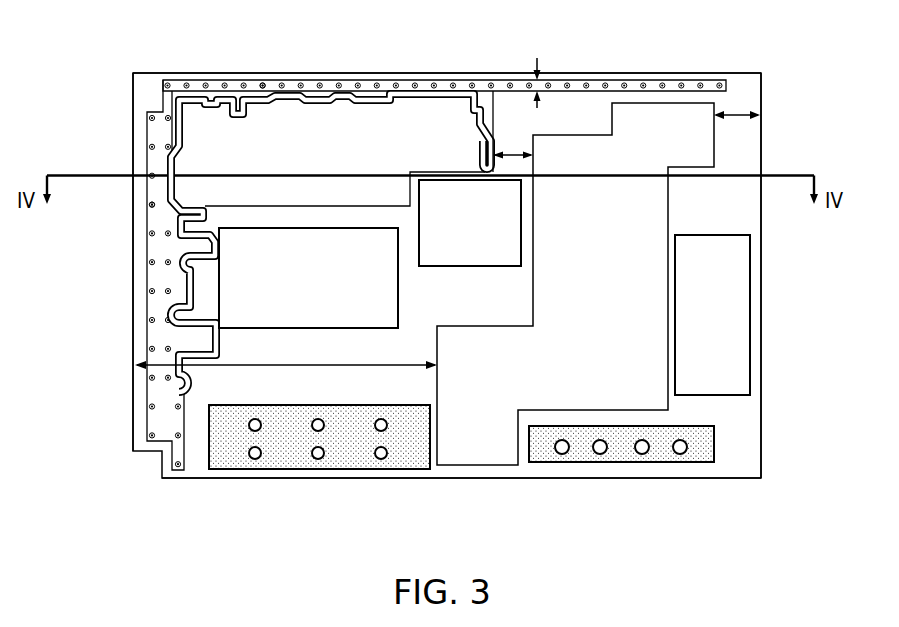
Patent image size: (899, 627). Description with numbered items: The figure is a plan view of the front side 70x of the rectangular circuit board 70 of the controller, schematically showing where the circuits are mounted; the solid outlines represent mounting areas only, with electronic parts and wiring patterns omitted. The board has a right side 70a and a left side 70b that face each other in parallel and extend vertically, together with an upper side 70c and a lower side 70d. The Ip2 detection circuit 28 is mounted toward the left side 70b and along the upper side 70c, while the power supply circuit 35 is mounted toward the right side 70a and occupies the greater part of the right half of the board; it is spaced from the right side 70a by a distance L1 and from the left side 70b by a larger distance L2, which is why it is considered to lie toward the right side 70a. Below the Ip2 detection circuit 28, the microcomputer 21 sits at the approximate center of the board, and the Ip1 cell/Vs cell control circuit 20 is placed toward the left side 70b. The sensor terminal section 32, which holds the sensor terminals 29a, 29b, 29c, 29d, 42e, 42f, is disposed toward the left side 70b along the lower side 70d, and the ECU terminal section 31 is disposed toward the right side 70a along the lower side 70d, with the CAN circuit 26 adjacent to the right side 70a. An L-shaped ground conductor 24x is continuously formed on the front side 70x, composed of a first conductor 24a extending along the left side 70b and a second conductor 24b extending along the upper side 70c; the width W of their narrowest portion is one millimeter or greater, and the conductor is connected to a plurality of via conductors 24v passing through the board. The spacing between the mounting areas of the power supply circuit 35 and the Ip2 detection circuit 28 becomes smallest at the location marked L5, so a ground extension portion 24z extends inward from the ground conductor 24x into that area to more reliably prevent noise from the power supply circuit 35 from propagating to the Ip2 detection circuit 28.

The circuit board 70 is at (727, 210).
The front side 70x is at (844, 242).
The right side 70a is at (762, 118).
The left side 70b is at (133, 398).
The upper side 70c is at (357, 80).
The lower side 70d is at (401, 479).
The ground conductor 24x is at (125, 23).
The first conductor 24a is at (152, 128).
The second conductor 24b is at (216, 85).
The via conductors 24v is at (262, 88).
The ground extension portion 24z is at (490, 147).
The Ip2 detection circuit 28 is at (410, 105).
The Ip1 cell/Vs cell control circuit 20 is at (399, 301).
The microcomputer 21 is at (465, 252).
The CAN circuit 26 is at (750, 322).
The power supply circuit 35 is at (481, 455).
The ECU terminal section 31 is at (637, 465).
The sensor terminal section 32 is at (315, 470).
The sensor terminal section 29a is at (334, 453).
The sensor terminal section 29b is at (334, 425).
The sensor terminal section 29c is at (271, 453).
The sensor terminal section 29d is at (271, 425).
The sensor terminal section 42e is at (397, 425).
The sensor terminal section 42f is at (397, 453).
The distance L1 is at (737, 129).
The distance L2 is at (286, 375).
The smallest spacing location L5 is at (513, 148).
The width W is at (547, 73).